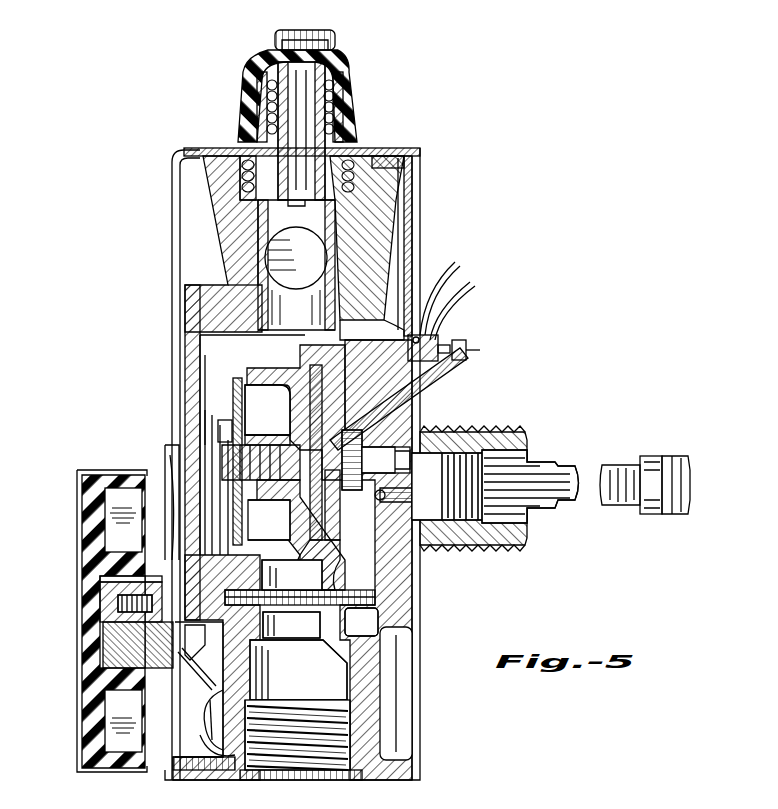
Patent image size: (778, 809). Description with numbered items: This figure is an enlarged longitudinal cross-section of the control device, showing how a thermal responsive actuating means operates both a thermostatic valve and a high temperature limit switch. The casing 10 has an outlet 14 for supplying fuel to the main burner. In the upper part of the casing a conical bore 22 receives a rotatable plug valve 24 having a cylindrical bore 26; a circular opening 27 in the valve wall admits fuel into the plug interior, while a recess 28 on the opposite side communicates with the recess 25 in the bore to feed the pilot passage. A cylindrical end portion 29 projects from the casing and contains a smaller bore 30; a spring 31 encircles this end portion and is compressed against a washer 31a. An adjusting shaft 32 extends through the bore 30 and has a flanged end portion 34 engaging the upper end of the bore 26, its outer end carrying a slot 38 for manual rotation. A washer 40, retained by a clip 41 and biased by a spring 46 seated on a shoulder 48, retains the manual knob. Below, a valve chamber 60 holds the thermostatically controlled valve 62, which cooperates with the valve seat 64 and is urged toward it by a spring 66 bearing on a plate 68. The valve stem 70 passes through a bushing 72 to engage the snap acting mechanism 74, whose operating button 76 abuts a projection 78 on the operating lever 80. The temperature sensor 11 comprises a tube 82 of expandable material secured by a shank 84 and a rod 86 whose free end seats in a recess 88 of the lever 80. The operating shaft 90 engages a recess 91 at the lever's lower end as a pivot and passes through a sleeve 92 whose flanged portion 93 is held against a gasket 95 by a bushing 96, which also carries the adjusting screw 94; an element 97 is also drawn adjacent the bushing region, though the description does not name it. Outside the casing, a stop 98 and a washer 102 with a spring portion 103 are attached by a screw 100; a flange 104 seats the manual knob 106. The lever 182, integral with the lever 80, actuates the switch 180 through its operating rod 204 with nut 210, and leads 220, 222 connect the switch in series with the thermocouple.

The casing 10 is at (422, 156).
The temperature sensor 11 is at (657, 456).
The outlet 14 is at (330, 782).
The conical bore 22 is at (408, 191).
The plug valve 24 is at (330, 110).
The recess 25 is at (240, 252).
The cylindrical bore 26 is at (280, 270).
The circular opening 27 is at (276, 250).
The recess 28 is at (240, 238).
The cylindrical end portion 29 is at (345, 135).
The cylindrical bore 30 is at (258, 150).
The spring 31 is at (400, 176).
The washer 31a is at (388, 156).
The adjusting shaft 32 is at (300, 93).
The flanged end portion 34 is at (385, 225).
The slot 38 is at (310, 34).
The washer 40 is at (340, 60).
The clip 41 is at (290, 48).
The spring 46 is at (245, 100).
The shoulder 48 is at (245, 135).
The valve chamber 60 is at (239, 557).
The thermostatically controlled valve 62 is at (246, 540).
The valve seat 64 is at (245, 378).
The spring 66 is at (205, 538).
The plate 68 is at (190, 362).
The valve stem 70 is at (250, 408).
The bushing 72 is at (280, 432).
The snap acting mechanism 74 is at (308, 366).
The operating button 76 is at (355, 430).
The projection 78 is at (405, 425).
The operating lever 80 is at (392, 620).
The tube 82 is at (612, 466).
The shank 84 is at (462, 432).
The rod 86 is at (560, 470).
The recess 88 is at (395, 492).
The operating shaft 90 is at (361, 622).
The recess 91 is at (380, 598).
The sleeve 92 is at (282, 636).
The flanged portion 93 is at (262, 648).
The adjusting screw 94 is at (175, 530).
The gasket 95 is at (270, 576).
The bushing 96 is at (220, 640).
The spring 97 is at (212, 700).
The stop 98 is at (100, 650).
The screw 100 is at (110, 608).
The washer 102 is at (100, 590).
The spring portion 103 is at (155, 560).
The flange 104 is at (165, 698).
The manual operable knob 106 is at (118, 472).
The switch 180 is at (440, 340).
The lever 182 is at (445, 372).
The operating rod 204 is at (480, 350).
The nut 210 is at (455, 348).
The lead 220 is at (440, 280).
The lead 222 is at (458, 292).